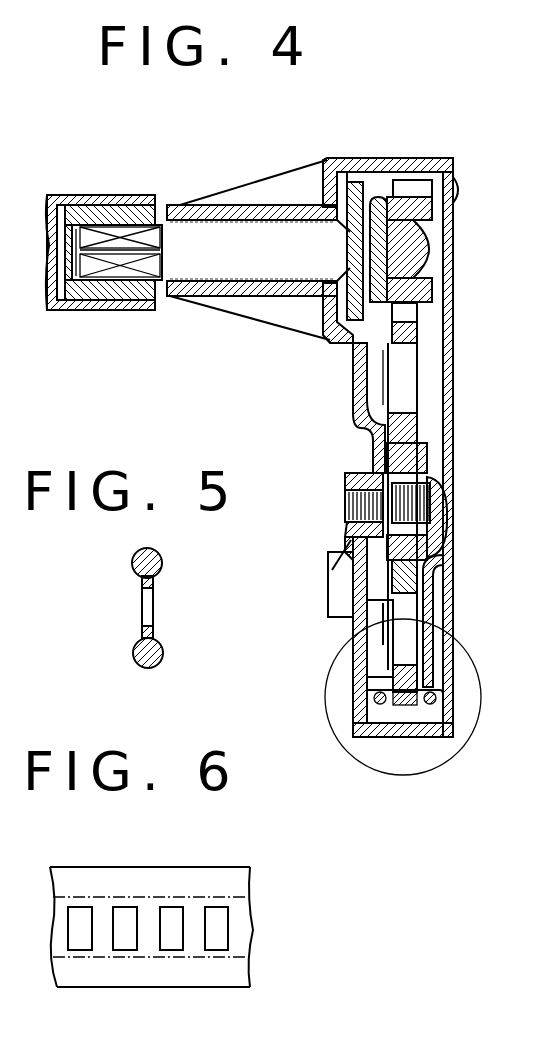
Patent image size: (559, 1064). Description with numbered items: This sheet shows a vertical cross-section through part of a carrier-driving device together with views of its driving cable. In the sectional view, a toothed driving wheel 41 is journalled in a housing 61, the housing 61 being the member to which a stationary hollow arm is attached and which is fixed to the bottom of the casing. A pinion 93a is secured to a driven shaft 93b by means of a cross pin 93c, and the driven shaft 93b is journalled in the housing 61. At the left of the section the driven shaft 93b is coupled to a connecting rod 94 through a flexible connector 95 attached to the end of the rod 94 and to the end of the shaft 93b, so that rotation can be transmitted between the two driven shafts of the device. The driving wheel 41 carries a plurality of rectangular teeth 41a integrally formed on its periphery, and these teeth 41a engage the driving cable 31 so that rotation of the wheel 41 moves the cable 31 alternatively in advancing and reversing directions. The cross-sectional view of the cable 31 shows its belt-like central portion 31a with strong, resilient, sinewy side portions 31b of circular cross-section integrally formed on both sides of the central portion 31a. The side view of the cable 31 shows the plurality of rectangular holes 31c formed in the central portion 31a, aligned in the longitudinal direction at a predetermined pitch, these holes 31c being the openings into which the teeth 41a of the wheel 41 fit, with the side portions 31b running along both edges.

In FIG. 4, the connecting rod 94 is at (50, 197).
In FIG. 4, the flexible connector 95 is at (108, 303).
In FIG. 4, the driven shaft 93b is at (237, 268).
In FIG. 4, the cross pin 93c is at (377, 198).
In FIG. 4, the pinion 93a is at (410, 183).
In FIG. 4, the teeth 41a is at (417, 316).
In FIG. 4, the toothed driving wheel 41 is at (397, 427).
In FIG. 4, the housing 61 is at (443, 497).
In FIG. 4, the driving cable 31 is at (433, 713).
In FIG. 5, the driving cable 31 is at (151, 612).
In FIG. 6, the driving cable 31 is at (182, 935).
In FIG. 5, the central portion 31a is at (143, 582).
In FIG. 6, the central portion 31a is at (148, 952).
In FIG. 5, the side portion 31b is at (135, 557).
In FIG. 6, the side portion 31b is at (107, 880).
In FIG. 5, the rectangular hole 31c is at (148, 617).
In FIG. 6, the rectangular hole 31c is at (130, 935).